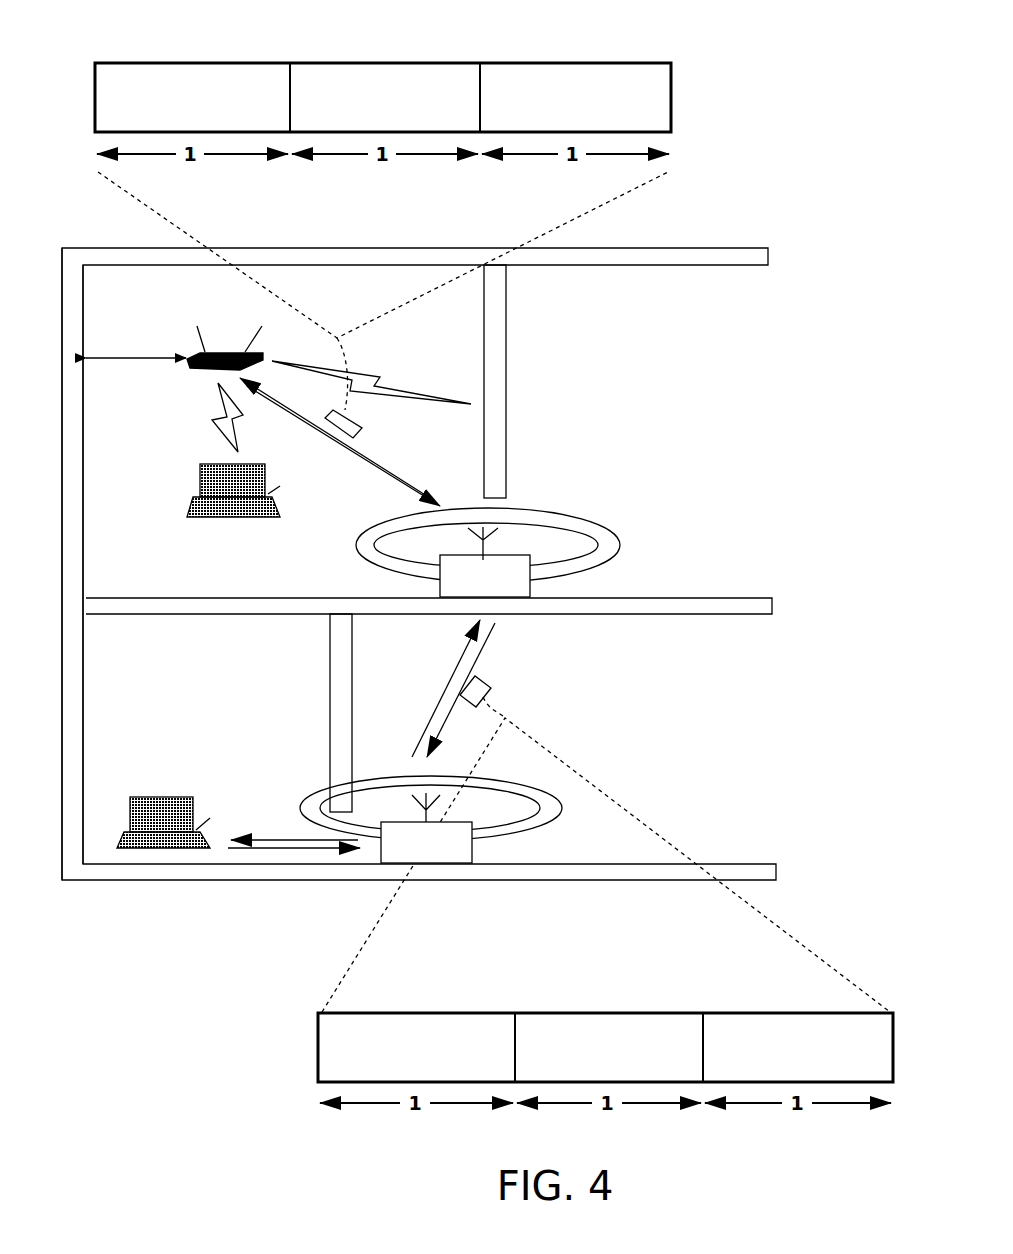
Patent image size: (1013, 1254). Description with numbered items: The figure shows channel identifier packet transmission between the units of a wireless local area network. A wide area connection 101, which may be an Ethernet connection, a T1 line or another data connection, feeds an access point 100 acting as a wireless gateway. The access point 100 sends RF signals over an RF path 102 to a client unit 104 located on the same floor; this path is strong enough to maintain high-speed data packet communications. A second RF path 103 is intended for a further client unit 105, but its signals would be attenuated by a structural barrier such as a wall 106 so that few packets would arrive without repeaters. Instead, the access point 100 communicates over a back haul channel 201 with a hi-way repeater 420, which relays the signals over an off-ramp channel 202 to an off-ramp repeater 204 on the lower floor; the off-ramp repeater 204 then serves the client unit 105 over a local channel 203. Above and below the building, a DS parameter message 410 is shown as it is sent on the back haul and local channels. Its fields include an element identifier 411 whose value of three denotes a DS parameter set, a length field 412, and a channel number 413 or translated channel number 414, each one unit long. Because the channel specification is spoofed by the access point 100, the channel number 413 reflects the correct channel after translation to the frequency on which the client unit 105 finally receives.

The access point 100 is at (200, 352).
The wide area connection 101 is at (118, 356).
The RF path 102 is at (218, 418).
The RF path 103 is at (395, 390).
The client unit 104 is at (200, 482).
The client unit 105 is at (165, 797).
The wall 106 is at (506, 380).
The back haul channel 201 is at (388, 460).
The off-ramp channel 202 is at (692, 698).
The local channel 203 is at (280, 830).
The off-ramp repeater 204 is at (480, 850).
The DS parameter message 410 is at (95, 70).
The frame type field 411 is at (245, 62).
The flag field 412 is at (447, 62).
The channel number 413 is at (634, 62).
The address field D 414 is at (764, 1013).
The repeater 420 is at (540, 580).